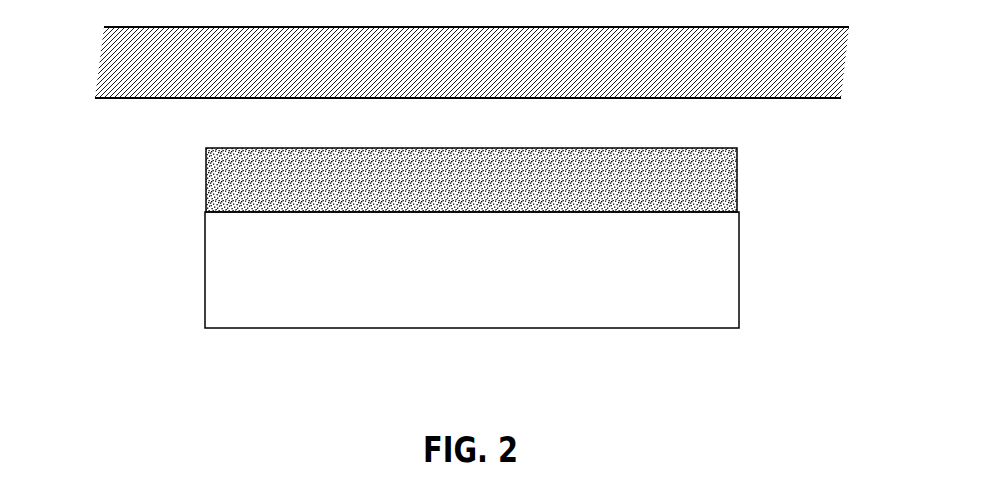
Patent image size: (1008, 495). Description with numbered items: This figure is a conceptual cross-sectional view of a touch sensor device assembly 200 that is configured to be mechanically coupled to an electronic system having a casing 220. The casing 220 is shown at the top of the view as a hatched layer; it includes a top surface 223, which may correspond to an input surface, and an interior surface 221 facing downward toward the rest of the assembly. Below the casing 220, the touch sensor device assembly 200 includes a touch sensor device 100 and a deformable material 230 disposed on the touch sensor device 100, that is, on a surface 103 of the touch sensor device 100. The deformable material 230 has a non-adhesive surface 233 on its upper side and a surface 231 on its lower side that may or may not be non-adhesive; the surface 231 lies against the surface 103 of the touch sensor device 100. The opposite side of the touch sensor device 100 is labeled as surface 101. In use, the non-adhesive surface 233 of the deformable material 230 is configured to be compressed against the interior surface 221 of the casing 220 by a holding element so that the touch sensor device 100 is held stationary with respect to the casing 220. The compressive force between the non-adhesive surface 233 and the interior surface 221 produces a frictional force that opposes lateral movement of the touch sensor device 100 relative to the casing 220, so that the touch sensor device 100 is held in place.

The touch sensor device 100 is at (496, 285).
The bottom surface of substrate 101 is at (205, 328).
The surface of touch sensor device 103 is at (739, 212).
The touch sensor device assembly 200 is at (109, 281).
The casing 220 is at (499, 77).
The interior surface of casing 221 is at (133, 98).
The top surface of casing 223 is at (808, 27).
The deformable material 230 is at (489, 195).
The surface of deformable material 231 is at (205, 214).
The non-adhesive surface of deformable material 233 is at (736, 148).